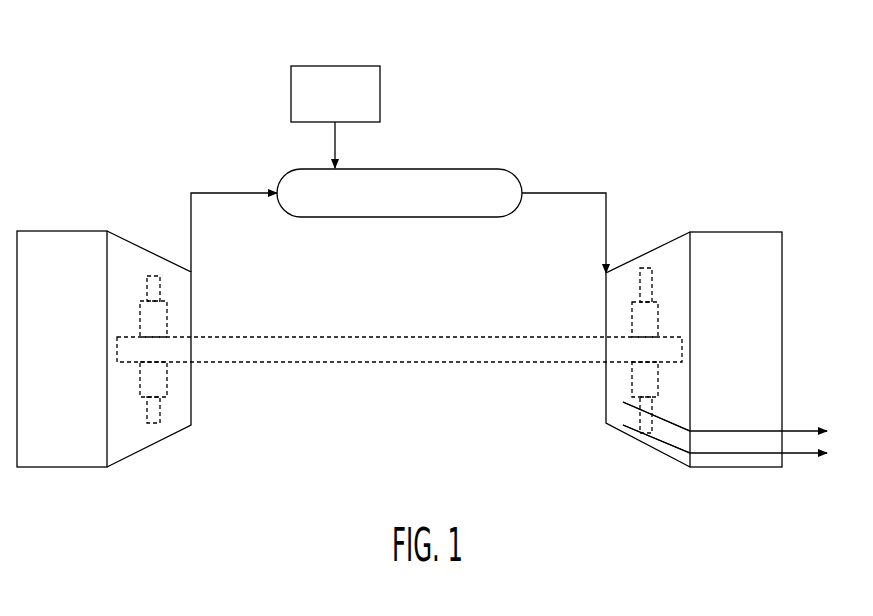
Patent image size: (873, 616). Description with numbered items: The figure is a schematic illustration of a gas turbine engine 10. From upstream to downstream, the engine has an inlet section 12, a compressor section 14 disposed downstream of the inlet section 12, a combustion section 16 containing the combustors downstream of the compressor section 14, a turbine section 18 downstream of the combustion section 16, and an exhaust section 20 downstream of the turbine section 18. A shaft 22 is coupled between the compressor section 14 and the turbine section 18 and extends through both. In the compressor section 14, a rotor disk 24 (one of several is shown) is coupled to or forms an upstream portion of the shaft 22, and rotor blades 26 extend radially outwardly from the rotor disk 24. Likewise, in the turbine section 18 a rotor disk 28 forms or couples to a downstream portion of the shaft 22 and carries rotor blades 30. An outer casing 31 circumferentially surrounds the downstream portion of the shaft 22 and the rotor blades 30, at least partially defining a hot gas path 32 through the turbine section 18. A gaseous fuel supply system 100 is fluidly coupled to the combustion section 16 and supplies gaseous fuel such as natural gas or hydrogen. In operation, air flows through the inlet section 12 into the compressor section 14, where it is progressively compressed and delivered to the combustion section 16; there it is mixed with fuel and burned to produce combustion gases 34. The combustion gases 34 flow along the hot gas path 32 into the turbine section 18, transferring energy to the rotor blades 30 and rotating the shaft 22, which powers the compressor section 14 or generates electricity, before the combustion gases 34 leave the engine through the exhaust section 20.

The gas turbine engine 10 is at (652, 81).
The inlet section 12 is at (43, 231).
The compressor section 14 is at (150, 252).
The combustion section 16 is at (463, 169).
The turbine section 18 is at (672, 238).
The exhaust section 20 is at (745, 232).
The shaft 22 is at (430, 348).
The rotor disk 24 is at (140, 320).
The rotor blade 26 is at (147, 288).
The rotor disk 28 is at (632, 322).
The rotor blade 30 is at (645, 268).
The outer casing 31 is at (665, 457).
The hot gas path 32 is at (633, 438).
The combustion gases 34 is at (573, 193).
The gaseous fuel supply system 100 is at (353, 108).